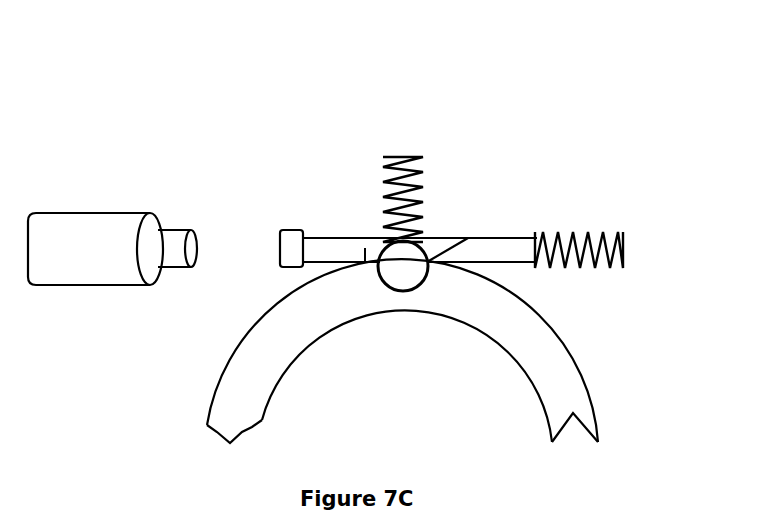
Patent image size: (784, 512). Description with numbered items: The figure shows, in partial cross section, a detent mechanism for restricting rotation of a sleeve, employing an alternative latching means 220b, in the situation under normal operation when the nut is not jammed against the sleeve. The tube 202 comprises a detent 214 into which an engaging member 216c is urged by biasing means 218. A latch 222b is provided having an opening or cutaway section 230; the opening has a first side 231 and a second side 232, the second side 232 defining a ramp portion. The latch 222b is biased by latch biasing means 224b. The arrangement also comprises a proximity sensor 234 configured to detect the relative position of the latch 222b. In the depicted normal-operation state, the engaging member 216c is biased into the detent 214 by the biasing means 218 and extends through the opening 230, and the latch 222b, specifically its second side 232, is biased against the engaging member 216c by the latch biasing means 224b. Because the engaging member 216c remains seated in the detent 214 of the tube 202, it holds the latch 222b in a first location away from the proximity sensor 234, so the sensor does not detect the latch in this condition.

The tube 202 is at (233, 430).
The detent 214 is at (392, 290).
The engaging member 216c is at (403, 255).
The biasing means 218 is at (403, 170).
The latching means 220b is at (487, 190).
The latch 222b is at (510, 233).
The latch biasing means 224b is at (622, 243).
The opening or cutaway section 230 is at (440, 248).
The first side 231 is at (365, 255).
The second side 232 is at (455, 248).
The proximity sensor 234 is at (120, 227).